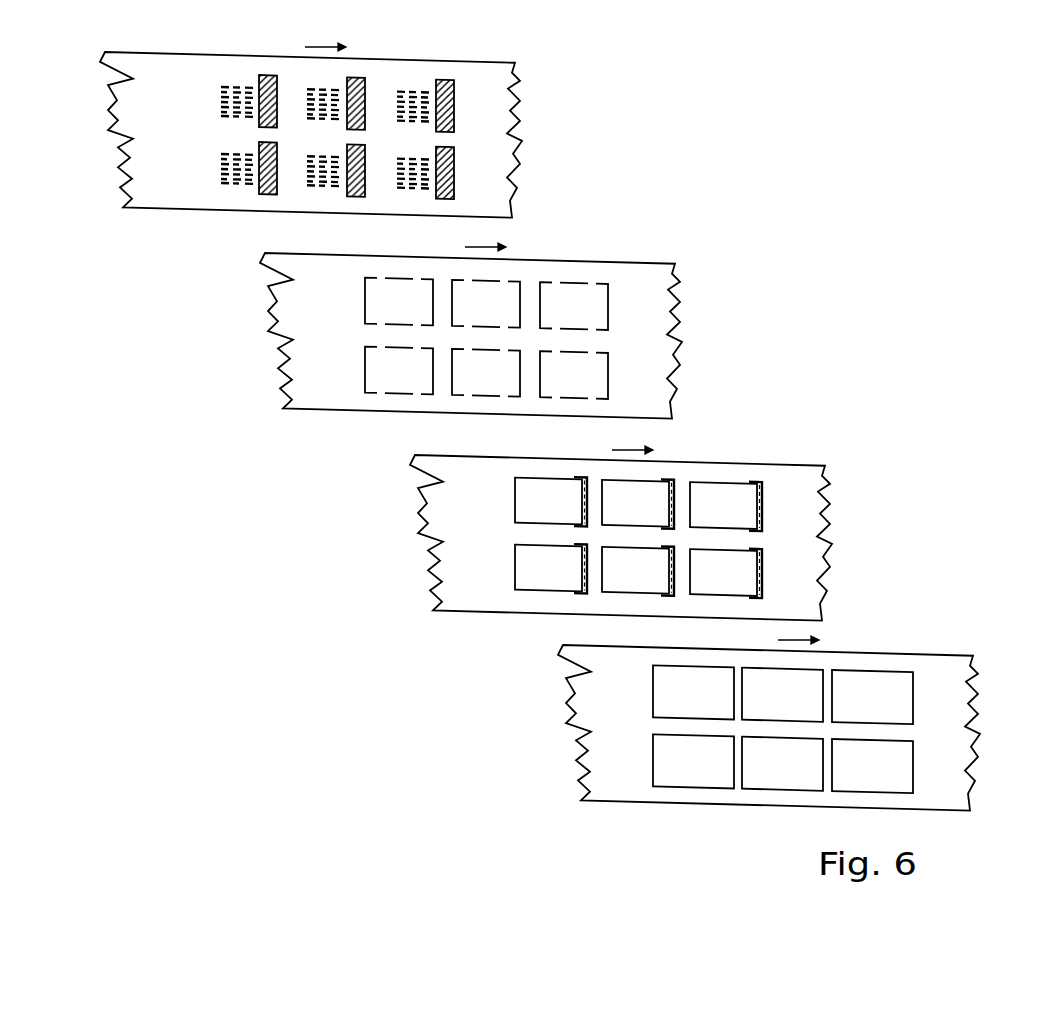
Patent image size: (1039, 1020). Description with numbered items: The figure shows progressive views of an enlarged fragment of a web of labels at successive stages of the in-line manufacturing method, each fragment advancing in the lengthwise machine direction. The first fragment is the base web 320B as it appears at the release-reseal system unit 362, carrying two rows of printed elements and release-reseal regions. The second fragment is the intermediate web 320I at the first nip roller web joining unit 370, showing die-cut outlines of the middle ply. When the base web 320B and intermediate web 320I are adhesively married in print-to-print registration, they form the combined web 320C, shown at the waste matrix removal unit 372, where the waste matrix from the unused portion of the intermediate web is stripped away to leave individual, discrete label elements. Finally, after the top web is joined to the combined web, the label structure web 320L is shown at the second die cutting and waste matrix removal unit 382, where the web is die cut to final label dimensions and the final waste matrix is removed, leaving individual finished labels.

The base web 320B is at (311, 130).
The release-reseal system unit 362 is at (184, 247).
The intermediate web 320I is at (471, 329).
The first nip roller web joining unit 370 is at (345, 449).
The combined web 320C is at (621, 532).
The waste matrix removal unit 372 is at (495, 650).
The label structure web 320L is at (769, 725).
The second die cutting and waste matrix removal unit 382 is at (637, 844).